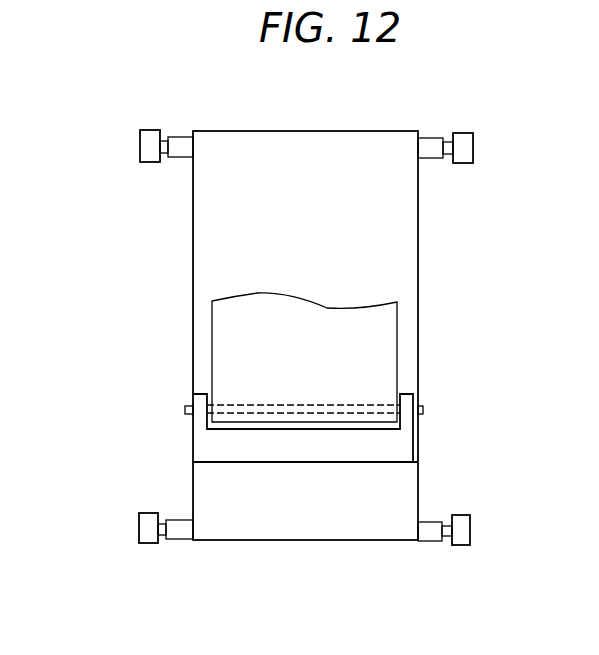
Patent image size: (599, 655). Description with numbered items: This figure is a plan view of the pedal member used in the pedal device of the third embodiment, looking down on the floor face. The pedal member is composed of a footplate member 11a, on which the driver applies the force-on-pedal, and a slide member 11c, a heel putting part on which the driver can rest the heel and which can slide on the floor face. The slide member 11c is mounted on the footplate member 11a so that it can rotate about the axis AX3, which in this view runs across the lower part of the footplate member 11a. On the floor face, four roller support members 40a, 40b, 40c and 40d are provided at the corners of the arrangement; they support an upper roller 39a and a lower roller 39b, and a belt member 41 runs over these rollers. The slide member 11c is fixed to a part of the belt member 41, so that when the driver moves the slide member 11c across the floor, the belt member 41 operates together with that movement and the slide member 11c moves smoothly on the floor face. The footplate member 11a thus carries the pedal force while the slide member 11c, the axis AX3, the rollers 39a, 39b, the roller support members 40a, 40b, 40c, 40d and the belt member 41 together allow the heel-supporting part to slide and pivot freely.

The footplate member 11a is at (397, 330).
The slide member 11c is at (380, 463).
The axis AX3 is at (423, 409).
The roller 39a is at (184, 137).
The roller 39b is at (171, 540).
The roller support member 40a is at (140, 146).
The roller support member 40b is at (473, 148).
The roller support member 40c is at (139, 526).
The roller support member 40d is at (470, 530).
The belt member 41 is at (193, 258).